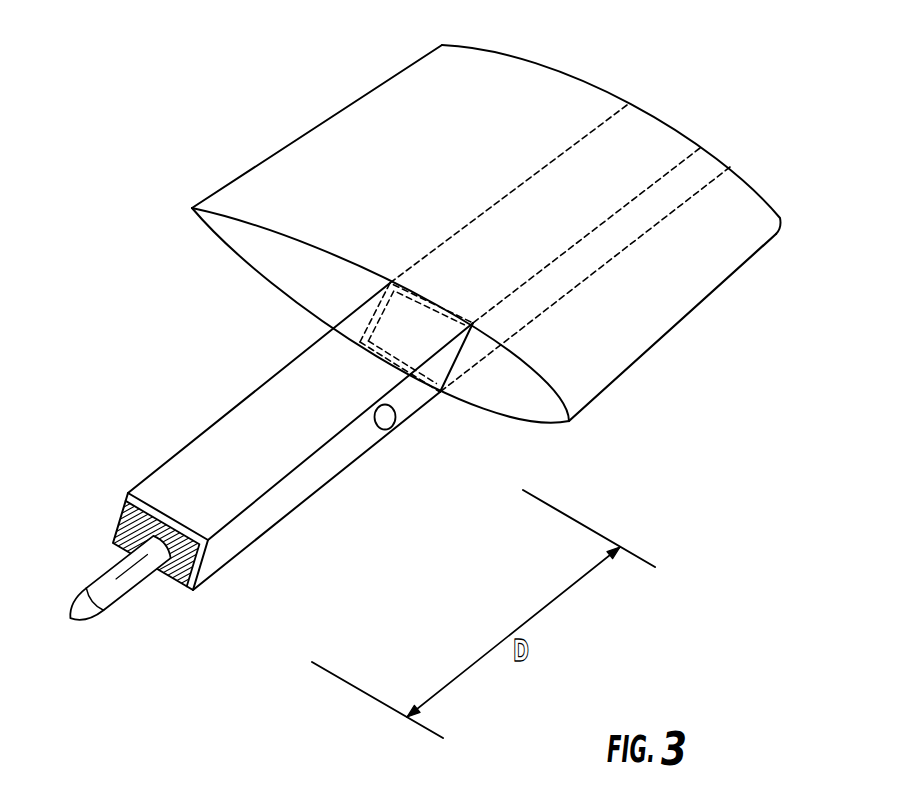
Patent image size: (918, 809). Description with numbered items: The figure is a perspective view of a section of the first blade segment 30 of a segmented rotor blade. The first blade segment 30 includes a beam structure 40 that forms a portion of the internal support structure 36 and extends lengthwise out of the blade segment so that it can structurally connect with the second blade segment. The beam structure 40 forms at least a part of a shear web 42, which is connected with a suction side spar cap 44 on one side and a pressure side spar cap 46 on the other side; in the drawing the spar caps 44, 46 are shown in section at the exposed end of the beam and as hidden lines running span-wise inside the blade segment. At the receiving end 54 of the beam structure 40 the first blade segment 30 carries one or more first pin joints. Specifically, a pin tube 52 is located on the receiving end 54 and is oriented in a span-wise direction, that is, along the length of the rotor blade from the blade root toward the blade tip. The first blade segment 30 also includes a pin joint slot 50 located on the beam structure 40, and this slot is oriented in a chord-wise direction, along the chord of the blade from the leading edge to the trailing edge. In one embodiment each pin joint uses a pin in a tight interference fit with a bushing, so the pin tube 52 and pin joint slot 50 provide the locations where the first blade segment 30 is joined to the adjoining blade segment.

The first blade segment 30 is at (310, 138).
The internal support structure 36 is at (312, 518).
The beam structure 40 is at (163, 478).
The shear web 42 is at (345, 458).
The suction side spar cap 44 is at (384, 367).
The pressure side spar cap 46 is at (430, 296).
The pin joint slot 50 is at (396, 418).
The pin tube 52 is at (130, 593).
The receiving end 54 is at (215, 583).